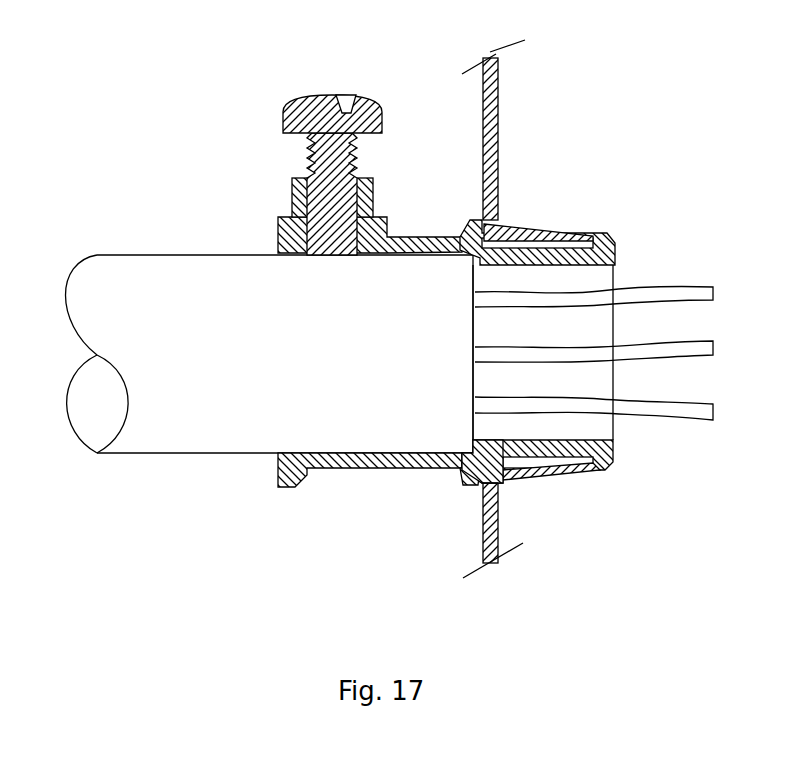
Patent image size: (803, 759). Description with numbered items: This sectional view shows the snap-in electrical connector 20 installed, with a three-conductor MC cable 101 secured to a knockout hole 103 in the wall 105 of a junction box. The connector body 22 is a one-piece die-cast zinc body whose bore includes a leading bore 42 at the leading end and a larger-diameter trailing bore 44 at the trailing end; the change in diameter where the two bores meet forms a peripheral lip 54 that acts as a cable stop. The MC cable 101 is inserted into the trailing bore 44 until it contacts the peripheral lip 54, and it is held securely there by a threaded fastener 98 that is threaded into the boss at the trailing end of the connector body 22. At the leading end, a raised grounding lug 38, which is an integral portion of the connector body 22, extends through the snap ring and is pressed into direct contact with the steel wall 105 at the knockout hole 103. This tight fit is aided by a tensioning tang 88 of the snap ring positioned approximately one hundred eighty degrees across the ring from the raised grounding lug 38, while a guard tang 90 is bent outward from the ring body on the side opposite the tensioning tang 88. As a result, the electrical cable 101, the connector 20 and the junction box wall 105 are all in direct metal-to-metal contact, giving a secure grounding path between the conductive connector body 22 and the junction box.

The snap-in electrical connector 20 is at (198, 124).
The connector body 22 is at (328, 468).
The raised grounding lug 38 is at (505, 478).
The leading bore 42 is at (553, 339).
The trailing bore 44 is at (300, 249).
The peripheral lip 54 is at (473, 446).
The tensioning tang 88 is at (505, 226).
The guard tang 90 is at (510, 485).
The threaded fastener 98 is at (296, 104).
The MC cable 101 is at (270, 352).
The knockout hole 103 is at (500, 226).
The wall 105 is at (482, 190).